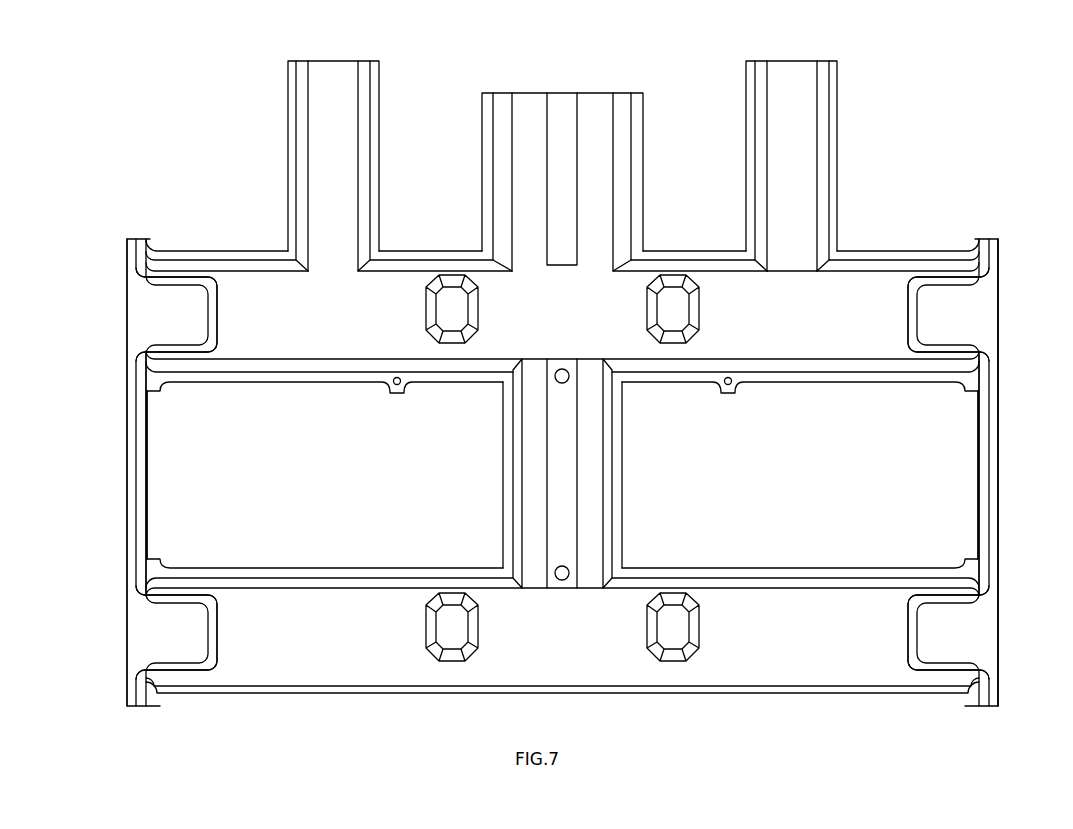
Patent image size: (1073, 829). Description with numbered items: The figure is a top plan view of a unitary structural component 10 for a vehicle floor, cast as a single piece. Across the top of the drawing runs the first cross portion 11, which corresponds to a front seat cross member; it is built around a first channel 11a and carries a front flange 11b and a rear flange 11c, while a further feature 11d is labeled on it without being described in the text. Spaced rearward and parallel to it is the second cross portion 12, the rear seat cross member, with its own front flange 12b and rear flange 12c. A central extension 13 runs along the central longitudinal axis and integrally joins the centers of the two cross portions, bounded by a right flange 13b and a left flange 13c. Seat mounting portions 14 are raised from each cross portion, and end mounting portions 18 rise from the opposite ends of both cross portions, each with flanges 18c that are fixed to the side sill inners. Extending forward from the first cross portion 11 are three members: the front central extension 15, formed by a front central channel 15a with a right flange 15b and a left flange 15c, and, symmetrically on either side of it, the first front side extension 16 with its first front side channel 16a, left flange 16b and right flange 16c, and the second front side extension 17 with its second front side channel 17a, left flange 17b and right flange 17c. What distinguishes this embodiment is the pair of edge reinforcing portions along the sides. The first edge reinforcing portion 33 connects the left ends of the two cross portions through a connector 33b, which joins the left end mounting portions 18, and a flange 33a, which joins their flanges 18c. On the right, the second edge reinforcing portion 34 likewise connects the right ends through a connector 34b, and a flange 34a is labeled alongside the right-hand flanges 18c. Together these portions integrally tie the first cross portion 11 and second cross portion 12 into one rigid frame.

The unitary structural component 10 is at (154, 69).
The first cross portion 11 is at (870, 240).
The first channel 11a is at (800, 332).
The front flange 11b is at (207, 256).
The rear flange 11c is at (457, 373).
The frame groove 11d is at (385, 389).
The second cross portion 12 is at (783, 548).
The front flange 12b is at (718, 565).
The rear flange 12c is at (730, 700).
The central extension 13 is at (637, 488).
The right flange 13b is at (506, 505).
The left flange 13c is at (624, 521).
The mounting portions 14 is at (424, 302).
The front central extension 15 is at (545, 70).
The front central channel 15a is at (597, 100).
The right flange 15b is at (483, 190).
The left flange 15c is at (632, 172).
The first front side extension 16 is at (337, 44).
The first front side channel 16a is at (346, 76).
The left pin outer wall 16b is at (294, 170).
The right flange 16c is at (378, 150).
The second front side extension 17 is at (791, 45).
The second front side channel 17a is at (806, 76).
The left flange 17b is at (752, 120).
The right flange 17c is at (836, 136).
The end mounting portions 18 is at (221, 310).
The flanges 18c is at (999, 307).
The first edge reinforcing portion 33 is at (165, 493).
The flange 33a is at (132, 505).
The connector 33b is at (146, 460).
The second edge reinforcing portion 34 is at (962, 470).
The right outer side edge 34a is at (1000, 483).
The connector 34b is at (982, 517).